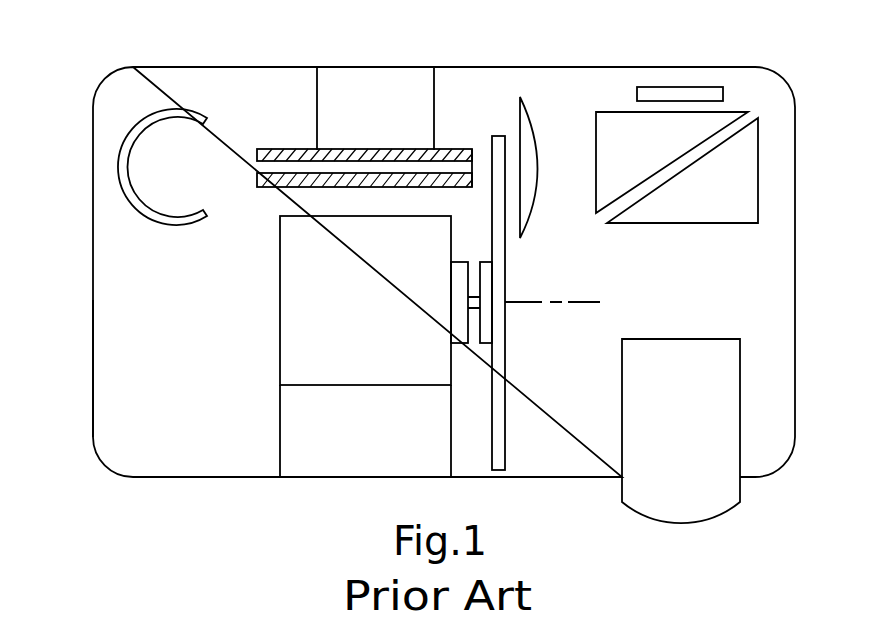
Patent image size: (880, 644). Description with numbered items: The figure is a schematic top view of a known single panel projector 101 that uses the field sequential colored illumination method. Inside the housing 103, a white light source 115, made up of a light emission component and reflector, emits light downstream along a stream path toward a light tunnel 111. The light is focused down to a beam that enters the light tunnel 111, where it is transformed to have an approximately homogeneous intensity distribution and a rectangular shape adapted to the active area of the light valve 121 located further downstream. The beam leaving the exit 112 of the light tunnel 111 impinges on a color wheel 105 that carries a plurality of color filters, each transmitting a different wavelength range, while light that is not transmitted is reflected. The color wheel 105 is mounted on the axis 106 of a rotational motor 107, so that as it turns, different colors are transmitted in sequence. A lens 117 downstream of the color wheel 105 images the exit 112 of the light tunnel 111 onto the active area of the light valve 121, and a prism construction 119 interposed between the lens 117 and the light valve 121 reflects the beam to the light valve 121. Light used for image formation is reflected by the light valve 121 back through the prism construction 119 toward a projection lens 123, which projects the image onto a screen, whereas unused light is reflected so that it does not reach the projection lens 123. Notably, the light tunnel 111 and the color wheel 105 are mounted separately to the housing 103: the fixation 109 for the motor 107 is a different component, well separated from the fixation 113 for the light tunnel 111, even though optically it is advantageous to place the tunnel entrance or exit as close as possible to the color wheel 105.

The projector 101 is at (93, 320).
The housing 103 is at (93, 375).
The color wheel 105 is at (505, 452).
The axis 106 is at (527, 304).
The rotational motor 107 is at (280, 355).
The fixation for the motor 109 is at (280, 453).
The light tunnel 111 is at (298, 150).
The exit of the light tunnel 112 is at (475, 165).
The fixation for the light tunnel 113 is at (348, 75).
The white light source 115 is at (180, 110).
The lens 117 is at (535, 132).
The prism construction 119 is at (614, 120).
The light valve 121 is at (657, 93).
The projection lens 123 is at (699, 347).